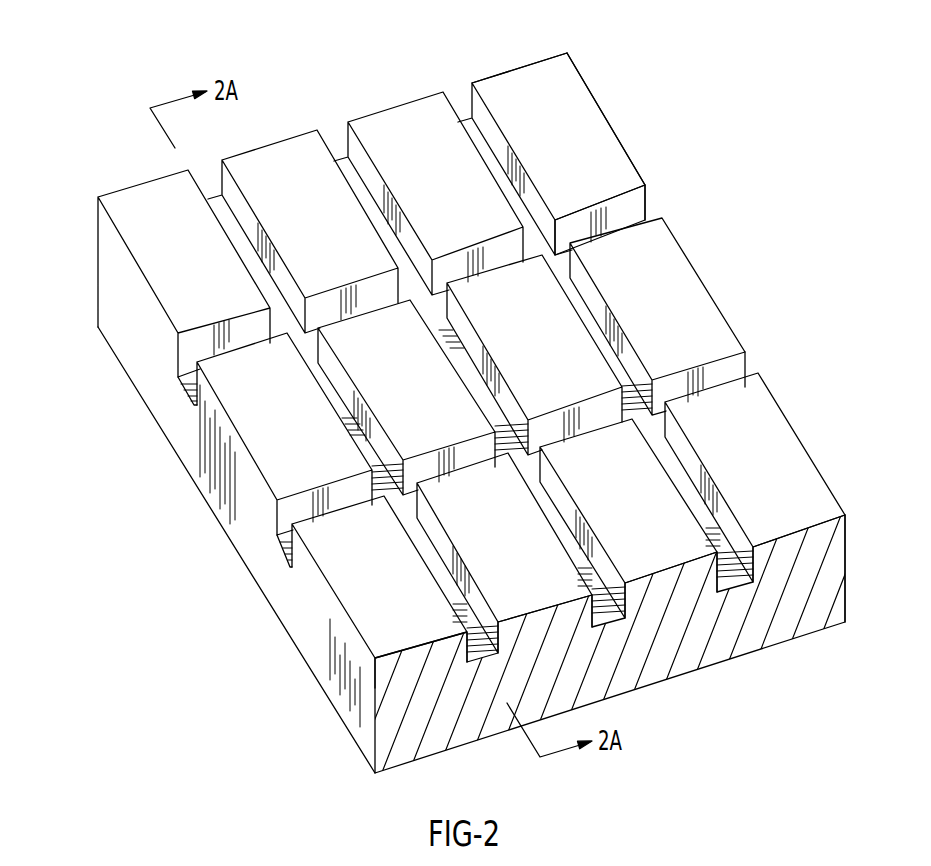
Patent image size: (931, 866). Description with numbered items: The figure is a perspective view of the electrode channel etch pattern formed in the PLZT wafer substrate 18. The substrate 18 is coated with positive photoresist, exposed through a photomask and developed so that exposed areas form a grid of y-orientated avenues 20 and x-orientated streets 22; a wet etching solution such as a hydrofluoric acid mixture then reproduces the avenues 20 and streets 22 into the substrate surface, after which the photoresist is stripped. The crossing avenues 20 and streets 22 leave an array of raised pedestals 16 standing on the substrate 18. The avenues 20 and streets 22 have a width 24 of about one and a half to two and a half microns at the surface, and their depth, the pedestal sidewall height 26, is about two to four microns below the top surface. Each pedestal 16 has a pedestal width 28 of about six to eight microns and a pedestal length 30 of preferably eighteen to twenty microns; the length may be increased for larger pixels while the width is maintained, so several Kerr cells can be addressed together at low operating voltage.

The pedestals 16 is at (576, 152).
The PLZT wafer substrate 18 is at (133, 347).
The y-orientated avenues 20 is at (750, 365).
The x-orientated streets 22 is at (733, 572).
The width 24 is at (281, 553).
The pedestal sidewall height 26 is at (633, 210).
The pedestal width 28 is at (520, 63).
The pedestal length 30 is at (614, 128).